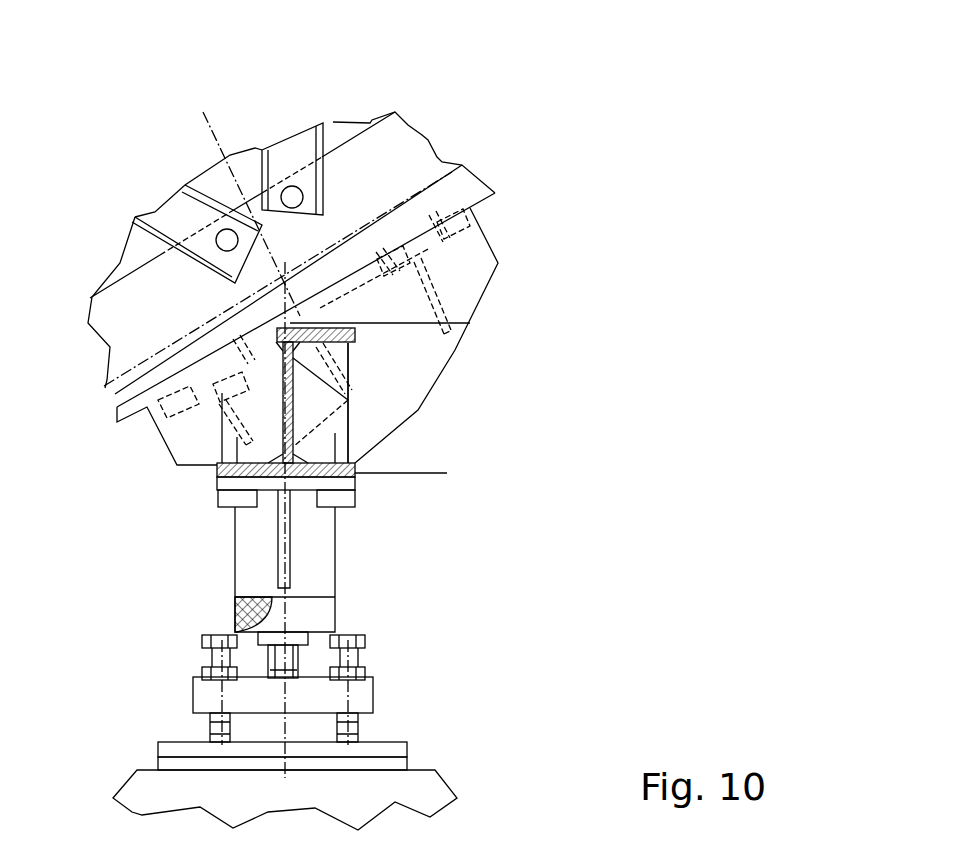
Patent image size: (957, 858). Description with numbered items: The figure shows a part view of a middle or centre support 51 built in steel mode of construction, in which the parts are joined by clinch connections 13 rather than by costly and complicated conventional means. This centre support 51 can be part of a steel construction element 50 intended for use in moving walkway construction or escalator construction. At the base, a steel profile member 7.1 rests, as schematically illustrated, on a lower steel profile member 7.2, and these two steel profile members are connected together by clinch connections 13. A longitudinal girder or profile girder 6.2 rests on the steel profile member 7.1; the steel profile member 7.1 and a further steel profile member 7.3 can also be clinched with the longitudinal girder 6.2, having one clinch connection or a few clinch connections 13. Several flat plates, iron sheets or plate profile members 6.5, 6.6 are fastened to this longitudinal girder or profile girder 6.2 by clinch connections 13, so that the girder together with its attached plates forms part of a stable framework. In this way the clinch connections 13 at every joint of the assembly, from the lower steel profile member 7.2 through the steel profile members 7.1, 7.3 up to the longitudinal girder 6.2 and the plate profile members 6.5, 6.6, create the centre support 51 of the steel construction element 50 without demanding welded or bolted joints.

The steel construction element 50 is at (648, 62).
The centre support 51 is at (438, 512).
The longitudinal girder 6.2 is at (405, 143).
The plate profile member 6.5 is at (180, 222).
The plate profile member 6.6 is at (282, 155).
The steel profile member 7.1 is at (290, 407).
The lower steel profile member 7.2 is at (220, 480).
The steel profile member 7.3 is at (408, 347).
The clinch connections 13 is at (226, 229).